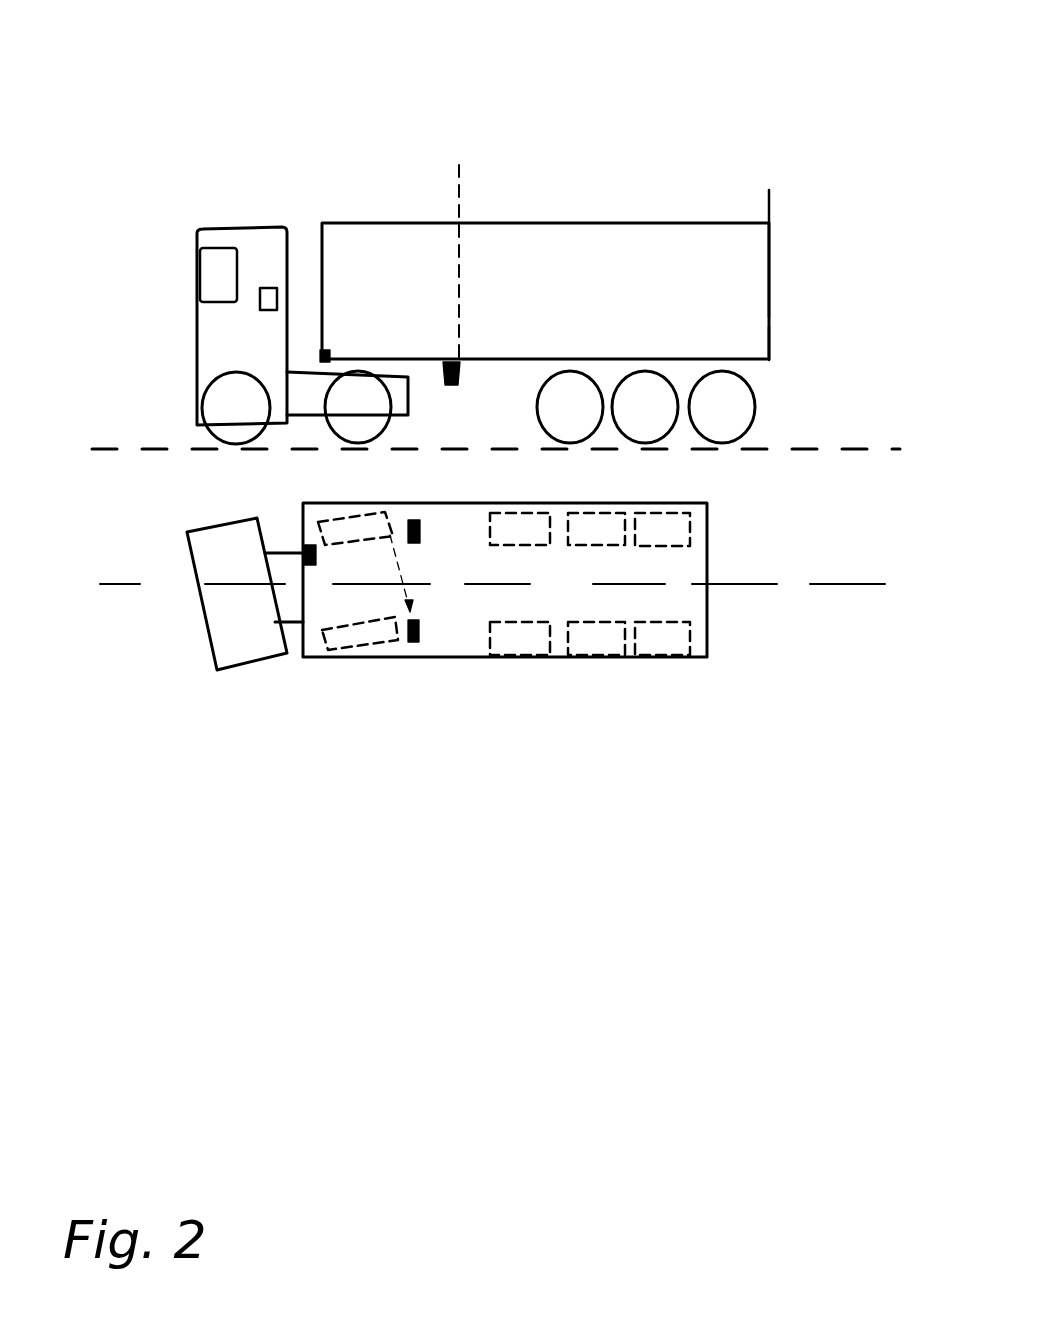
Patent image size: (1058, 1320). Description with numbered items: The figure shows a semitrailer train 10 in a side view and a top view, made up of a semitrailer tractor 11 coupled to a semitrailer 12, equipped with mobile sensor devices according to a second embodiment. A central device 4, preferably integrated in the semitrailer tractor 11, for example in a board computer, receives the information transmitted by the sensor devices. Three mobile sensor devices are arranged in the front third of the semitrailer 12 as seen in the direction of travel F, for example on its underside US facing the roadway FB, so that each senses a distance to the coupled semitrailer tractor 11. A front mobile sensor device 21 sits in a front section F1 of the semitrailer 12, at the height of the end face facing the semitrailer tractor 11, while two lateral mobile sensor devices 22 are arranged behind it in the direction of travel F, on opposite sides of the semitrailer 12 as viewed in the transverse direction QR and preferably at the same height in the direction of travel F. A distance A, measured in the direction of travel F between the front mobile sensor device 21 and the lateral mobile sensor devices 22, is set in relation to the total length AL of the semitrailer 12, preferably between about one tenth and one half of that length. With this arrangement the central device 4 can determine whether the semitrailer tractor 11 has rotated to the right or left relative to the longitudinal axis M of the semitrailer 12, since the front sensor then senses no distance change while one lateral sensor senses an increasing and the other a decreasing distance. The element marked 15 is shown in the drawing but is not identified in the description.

The semitrailer train 10 is at (160, 105).
The semitrailer tractor 11 is at (207, 358).
The semitrailer 12 is at (750, 265).
The central device 4 is at (265, 296).
The articulation 15 is at (427, 393).
The front mobile sensor device 21 is at (318, 358).
The lateral mobile sensor devices 22 is at (416, 520).
The underside US is at (500, 368).
The front section F1 is at (397, 162).
The roadway FB is at (880, 449).
The distance A is at (459, 192).
The total length AL is at (769, 210).
The longitudinal axis M is at (828, 585).
The transverse direction QR is at (65, 487).
The direction of travel F is at (650, 905).